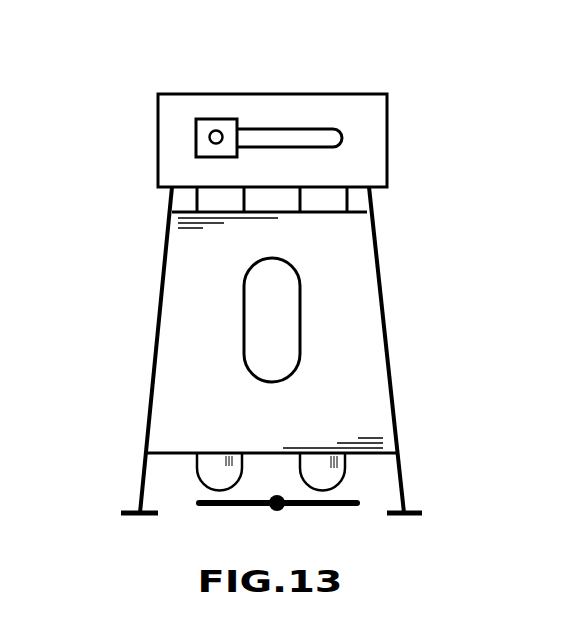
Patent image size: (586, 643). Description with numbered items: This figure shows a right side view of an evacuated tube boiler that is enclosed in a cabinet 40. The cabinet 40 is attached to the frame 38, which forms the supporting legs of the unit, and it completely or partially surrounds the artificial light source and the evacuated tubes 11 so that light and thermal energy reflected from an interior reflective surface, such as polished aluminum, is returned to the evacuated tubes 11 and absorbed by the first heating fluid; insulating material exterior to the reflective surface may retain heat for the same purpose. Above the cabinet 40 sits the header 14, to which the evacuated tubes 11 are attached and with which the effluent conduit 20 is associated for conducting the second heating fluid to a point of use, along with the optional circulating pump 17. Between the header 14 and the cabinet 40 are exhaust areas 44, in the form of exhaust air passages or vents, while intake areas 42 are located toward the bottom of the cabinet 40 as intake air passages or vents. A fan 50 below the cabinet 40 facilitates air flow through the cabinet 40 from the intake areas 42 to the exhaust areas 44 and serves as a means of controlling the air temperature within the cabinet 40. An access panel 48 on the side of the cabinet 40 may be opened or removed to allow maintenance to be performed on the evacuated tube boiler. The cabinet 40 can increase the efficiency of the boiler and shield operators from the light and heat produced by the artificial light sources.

The evacuated tubes 11 is at (345, 477).
The header 14 is at (322, 93).
The circulating pump 17 is at (195, 141).
The effluent conduit 20 is at (254, 128).
The frame 38 is at (152, 363).
The cabinet 40 is at (193, 259).
The intake areas 42 is at (167, 468).
The exhaust areas 44 is at (358, 198).
The access panels 48 is at (278, 310).
The fans 50 is at (197, 506).